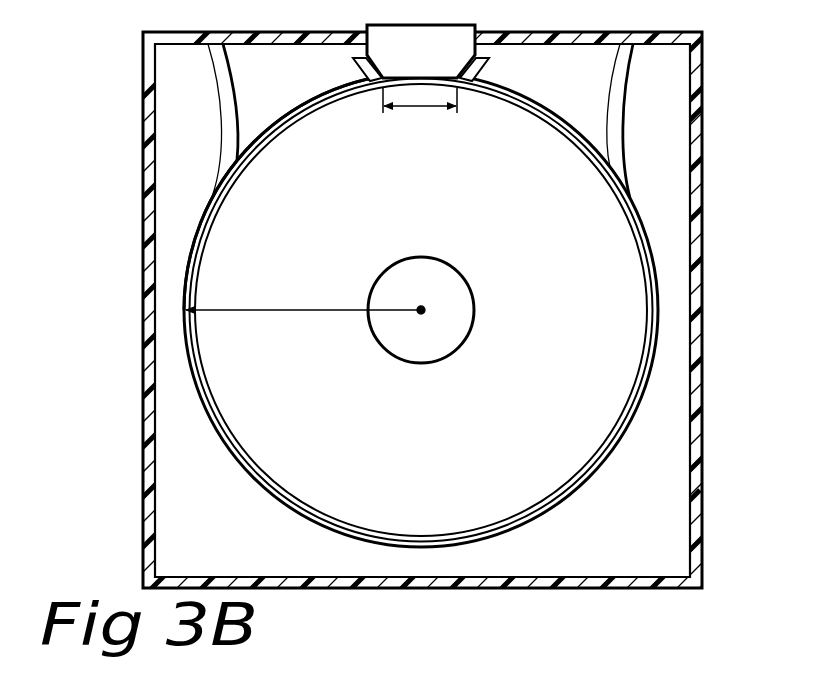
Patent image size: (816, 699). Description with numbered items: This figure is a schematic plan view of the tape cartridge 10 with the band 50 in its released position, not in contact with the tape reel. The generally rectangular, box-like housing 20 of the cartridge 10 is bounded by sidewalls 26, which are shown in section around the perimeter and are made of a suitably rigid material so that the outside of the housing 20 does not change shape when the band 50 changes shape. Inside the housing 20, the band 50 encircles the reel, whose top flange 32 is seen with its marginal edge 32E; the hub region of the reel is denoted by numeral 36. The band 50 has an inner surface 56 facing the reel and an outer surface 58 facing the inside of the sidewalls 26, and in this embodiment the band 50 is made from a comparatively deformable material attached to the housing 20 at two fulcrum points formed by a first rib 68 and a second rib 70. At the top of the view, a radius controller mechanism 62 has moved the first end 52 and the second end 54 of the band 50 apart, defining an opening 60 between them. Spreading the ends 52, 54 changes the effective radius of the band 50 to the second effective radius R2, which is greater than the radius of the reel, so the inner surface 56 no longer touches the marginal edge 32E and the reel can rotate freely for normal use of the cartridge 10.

The tape cartridge 10 is at (85, 207).
The housing 20 is at (703, 330).
The sidewalls 26 is at (700, 415).
The top flange 32 is at (292, 511).
The marginal edge of top flange 32E is at (258, 488).
The disc hub / center hole 36 is at (457, 320).
The band 50 is at (612, 467).
The first end 52 is at (478, 66).
The second end 54 is at (365, 68).
The inner surface 56 is at (583, 475).
The outer surface 58 is at (557, 505).
The opening 60 is at (420, 112).
The radius controller mechanism 62 is at (402, 30).
The first rib 68 is at (617, 115).
The second rib 70 is at (227, 115).
The second effective radius R2 is at (303, 295).